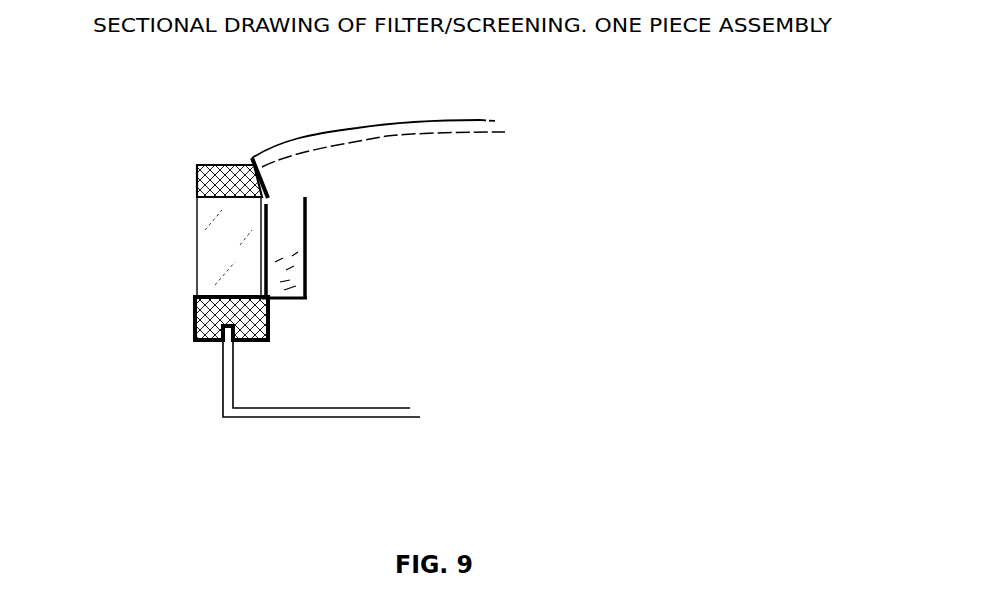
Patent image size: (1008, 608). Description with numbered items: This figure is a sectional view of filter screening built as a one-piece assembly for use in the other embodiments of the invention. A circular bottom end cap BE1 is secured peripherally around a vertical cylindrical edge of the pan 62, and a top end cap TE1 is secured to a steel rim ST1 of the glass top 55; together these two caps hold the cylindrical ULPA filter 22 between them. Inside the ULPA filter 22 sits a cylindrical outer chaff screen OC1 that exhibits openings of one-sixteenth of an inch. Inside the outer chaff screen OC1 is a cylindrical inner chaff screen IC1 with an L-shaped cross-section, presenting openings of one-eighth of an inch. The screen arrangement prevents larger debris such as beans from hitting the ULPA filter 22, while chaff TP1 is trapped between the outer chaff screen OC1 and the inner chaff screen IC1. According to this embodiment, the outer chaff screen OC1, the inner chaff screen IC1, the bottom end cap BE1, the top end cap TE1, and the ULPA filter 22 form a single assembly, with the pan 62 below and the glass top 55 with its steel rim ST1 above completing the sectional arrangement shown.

The glass top 55 is at (360, 128).
The steel rim ST1 is at (270, 184).
The top end cap TE1 is at (195, 184).
The ULPA filter 22 is at (213, 249).
The outer chaff screen OC1 is at (272, 259).
The inner chaff screen IC1 is at (300, 305).
The trapped chaff TP1 is at (287, 276).
The bottom end cap BE1 is at (195, 318).
The pan 62 is at (332, 417).